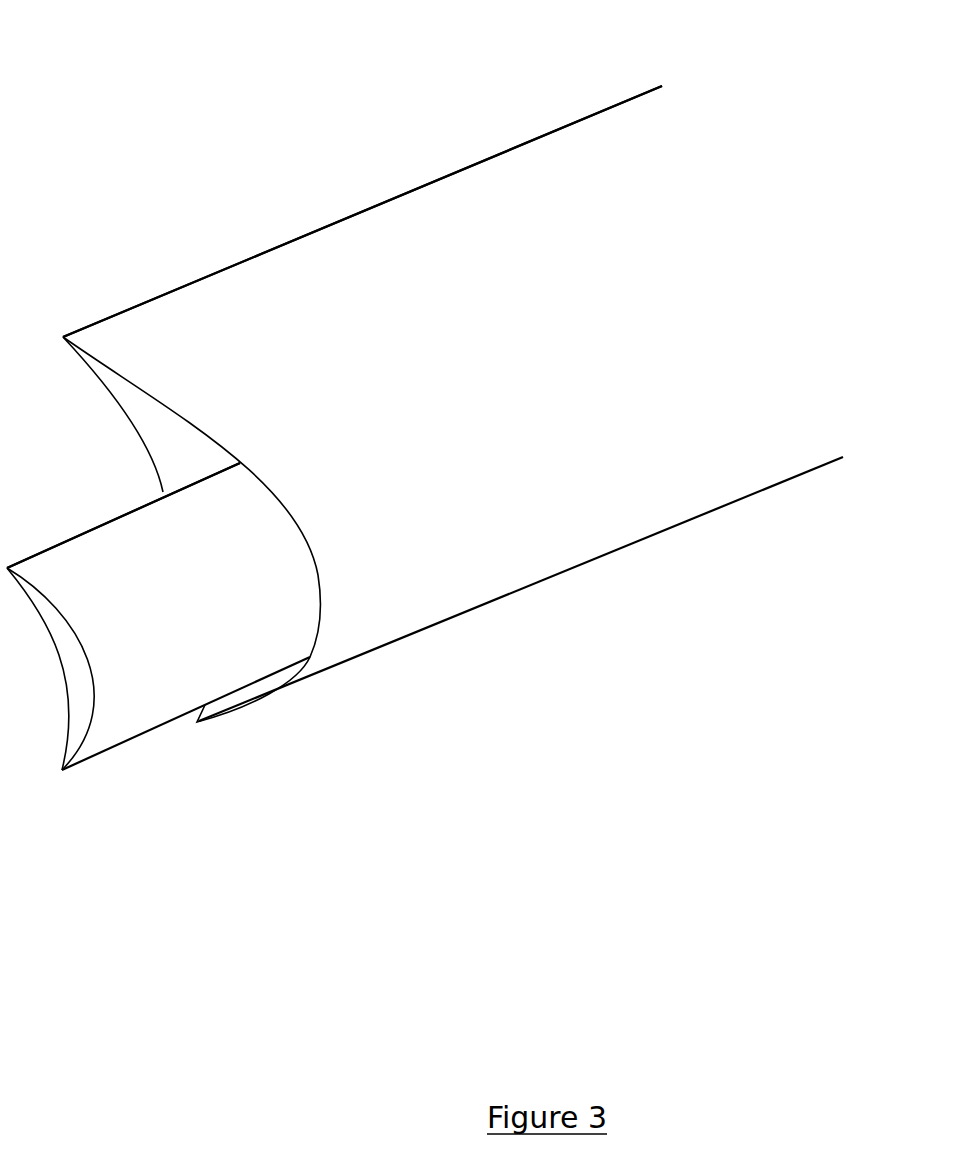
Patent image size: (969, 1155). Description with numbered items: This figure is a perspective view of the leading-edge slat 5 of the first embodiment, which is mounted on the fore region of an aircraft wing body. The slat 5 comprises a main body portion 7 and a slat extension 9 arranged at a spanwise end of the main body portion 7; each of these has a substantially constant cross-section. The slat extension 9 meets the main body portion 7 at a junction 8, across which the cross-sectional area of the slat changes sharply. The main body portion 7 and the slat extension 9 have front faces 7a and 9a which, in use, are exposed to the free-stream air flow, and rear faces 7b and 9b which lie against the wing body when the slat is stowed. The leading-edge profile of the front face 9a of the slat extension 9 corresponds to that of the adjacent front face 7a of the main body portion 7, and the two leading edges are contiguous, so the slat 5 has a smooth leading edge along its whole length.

The leading-edge slat 5 is at (303, 123).
The main body portion 7 is at (580, 460).
The front face of the main body portion 7a is at (604, 386).
The rear face of the main body portion 7b is at (147, 447).
The junction 8 is at (298, 530).
The slat extension 9 is at (201, 676).
The front face of the slat extension 9a is at (201, 556).
The rear face of the slat extension 9b is at (40, 632).